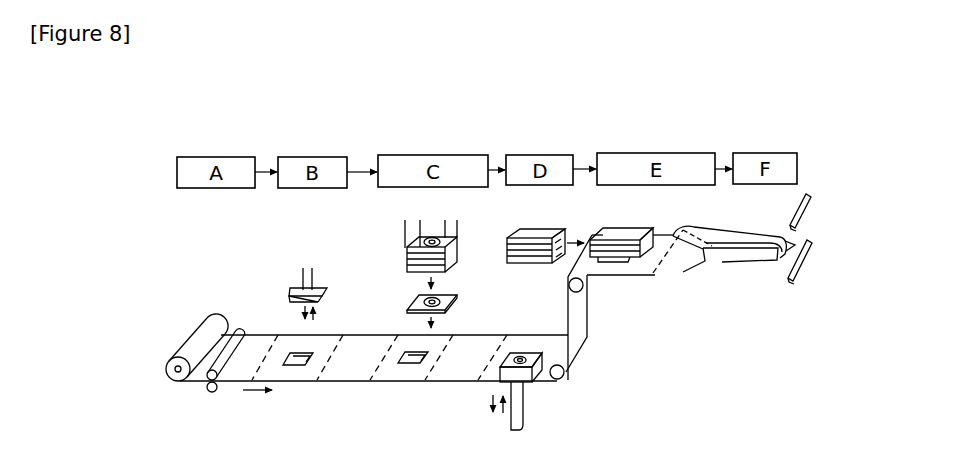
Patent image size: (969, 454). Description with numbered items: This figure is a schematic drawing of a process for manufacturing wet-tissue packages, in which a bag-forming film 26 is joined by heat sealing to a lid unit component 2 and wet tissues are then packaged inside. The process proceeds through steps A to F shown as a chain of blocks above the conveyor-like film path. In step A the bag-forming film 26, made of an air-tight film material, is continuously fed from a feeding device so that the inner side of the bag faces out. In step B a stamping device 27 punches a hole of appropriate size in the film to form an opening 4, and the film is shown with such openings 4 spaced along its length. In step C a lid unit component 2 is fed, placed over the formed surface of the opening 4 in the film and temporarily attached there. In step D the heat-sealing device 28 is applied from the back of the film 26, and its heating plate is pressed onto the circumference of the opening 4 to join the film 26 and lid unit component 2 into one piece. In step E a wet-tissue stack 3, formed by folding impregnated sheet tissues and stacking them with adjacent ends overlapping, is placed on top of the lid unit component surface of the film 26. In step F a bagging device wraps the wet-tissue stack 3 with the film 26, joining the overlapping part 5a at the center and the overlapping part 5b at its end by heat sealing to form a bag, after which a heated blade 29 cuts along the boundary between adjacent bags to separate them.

The lid unit component 2 is at (452, 253).
The wet-tissue stack 3 is at (541, 233).
The opening 4 is at (293, 367).
The overlapping part 5a is at (755, 240).
The overlapping part 5b is at (798, 243).
The bag-forming film 26 is at (260, 343).
The stamping device 27 is at (303, 275).
The heat-sealing device 28 is at (525, 395).
The heated blade 29 is at (810, 207).